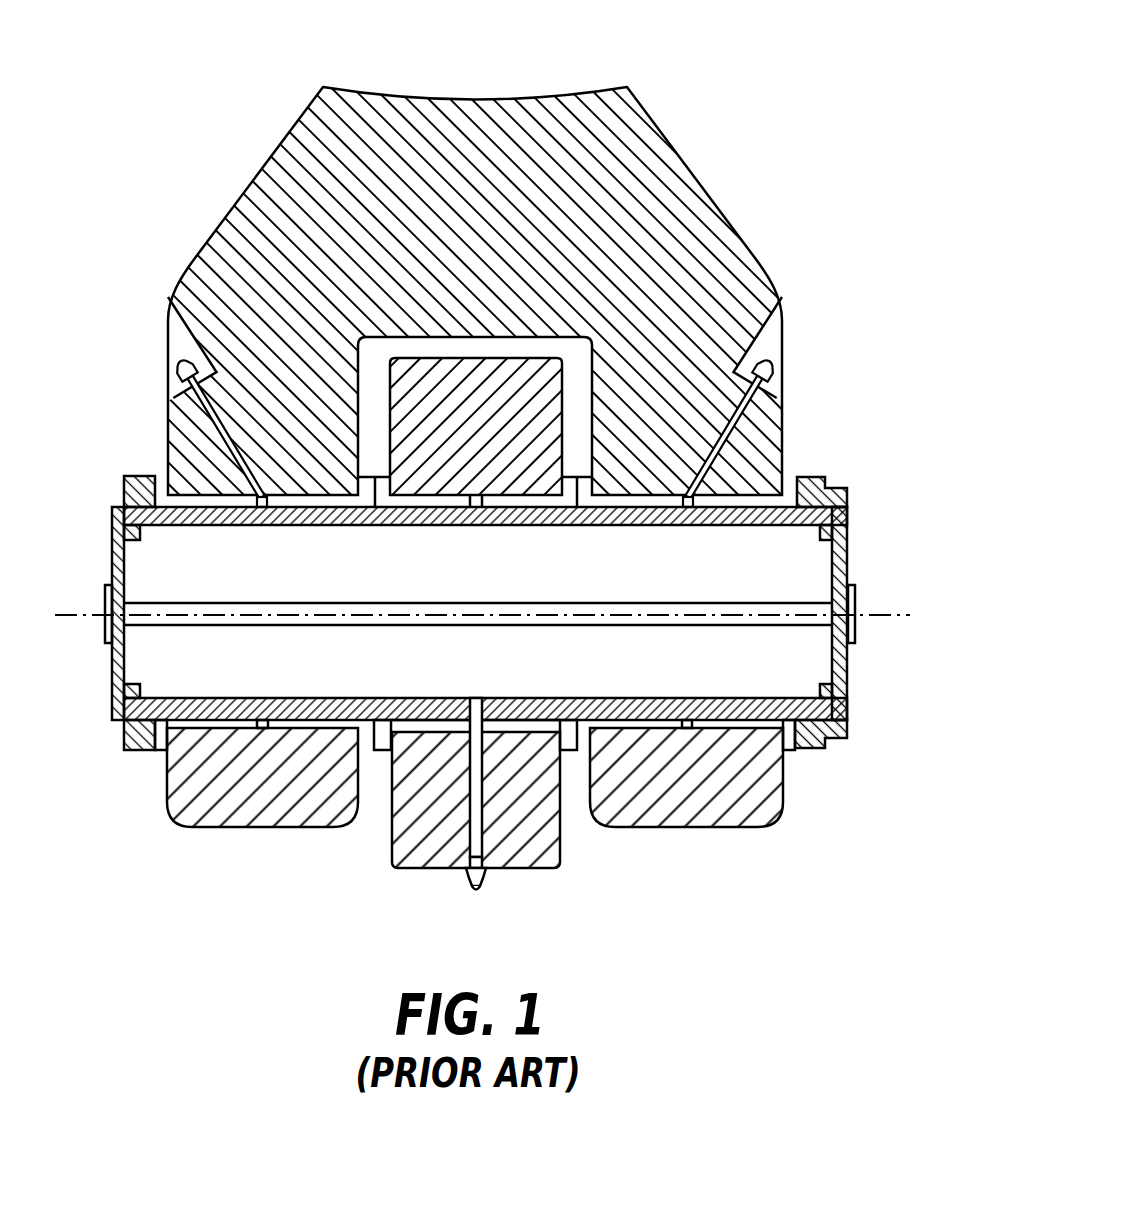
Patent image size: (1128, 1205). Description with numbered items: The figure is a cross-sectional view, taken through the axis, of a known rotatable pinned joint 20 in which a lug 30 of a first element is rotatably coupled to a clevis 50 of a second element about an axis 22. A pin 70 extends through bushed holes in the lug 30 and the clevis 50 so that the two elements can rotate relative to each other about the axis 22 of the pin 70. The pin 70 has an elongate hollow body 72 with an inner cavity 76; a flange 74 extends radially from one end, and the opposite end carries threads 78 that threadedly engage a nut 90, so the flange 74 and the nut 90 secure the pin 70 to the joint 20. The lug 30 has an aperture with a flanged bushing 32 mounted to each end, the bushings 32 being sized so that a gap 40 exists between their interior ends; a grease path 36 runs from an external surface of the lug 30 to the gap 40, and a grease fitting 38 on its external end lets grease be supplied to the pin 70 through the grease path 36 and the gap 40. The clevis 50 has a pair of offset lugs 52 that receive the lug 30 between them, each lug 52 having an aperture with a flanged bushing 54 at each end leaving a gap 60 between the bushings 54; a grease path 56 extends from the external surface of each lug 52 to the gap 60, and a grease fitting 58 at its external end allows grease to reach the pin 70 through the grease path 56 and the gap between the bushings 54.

The joint 20 is at (485, 471).
The axis 22 is at (893, 615).
The lug 30 is at (392, 866).
The flanged bushing 32 is at (382, 743).
The grease path 36 is at (480, 830).
The grease fitting 38 is at (472, 892).
The gap 40 is at (477, 725).
The clevis 50 is at (703, 185).
The offset lug 52 is at (262, 820).
The flanged bushing 54 is at (157, 752).
The grease path 56 is at (215, 420).
The grease fitting 58 is at (183, 368).
The gap 60 is at (262, 507).
The pin 70 is at (117, 737).
The elongate hollow body 72 is at (710, 700).
The flange 74 is at (128, 477).
The inner cavity 76 is at (175, 665).
The threads 78 is at (847, 728).
The nut 90 is at (817, 477).